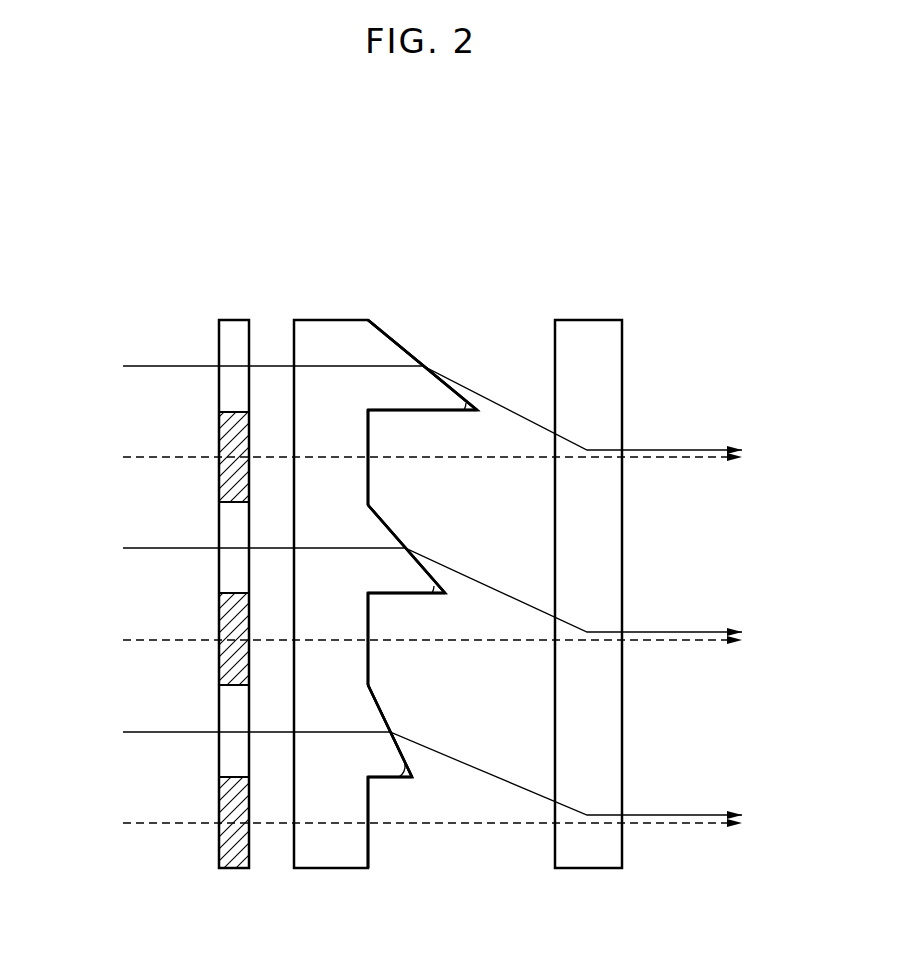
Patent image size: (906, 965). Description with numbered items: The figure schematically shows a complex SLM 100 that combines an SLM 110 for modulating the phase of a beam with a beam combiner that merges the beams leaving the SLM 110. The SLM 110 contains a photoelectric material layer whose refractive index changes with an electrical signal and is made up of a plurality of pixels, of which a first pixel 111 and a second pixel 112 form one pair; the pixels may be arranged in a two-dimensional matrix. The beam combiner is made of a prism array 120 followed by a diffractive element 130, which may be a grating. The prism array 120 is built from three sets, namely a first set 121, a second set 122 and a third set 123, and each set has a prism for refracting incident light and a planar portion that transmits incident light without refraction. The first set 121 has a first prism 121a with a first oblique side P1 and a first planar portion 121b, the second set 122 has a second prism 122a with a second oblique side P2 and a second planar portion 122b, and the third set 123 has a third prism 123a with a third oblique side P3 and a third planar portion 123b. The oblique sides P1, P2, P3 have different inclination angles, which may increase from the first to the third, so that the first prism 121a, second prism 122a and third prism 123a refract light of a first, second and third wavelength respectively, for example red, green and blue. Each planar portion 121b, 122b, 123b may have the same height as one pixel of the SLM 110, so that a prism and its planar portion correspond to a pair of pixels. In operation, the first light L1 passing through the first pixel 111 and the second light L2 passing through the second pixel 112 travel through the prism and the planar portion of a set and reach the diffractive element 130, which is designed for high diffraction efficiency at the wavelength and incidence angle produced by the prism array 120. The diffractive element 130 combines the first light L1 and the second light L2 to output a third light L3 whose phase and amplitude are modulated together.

The complex SLM 100 is at (150, 237).
The SLM 110 is at (233, 330).
The first pixel 111 is at (228, 384).
The second pixel 112 is at (228, 487).
The prism array 120 is at (331, 330).
The first set 121 is at (505, 498).
The first prism 121a is at (440, 412).
The first planar portion 121b is at (370, 477).
The second set 122 is at (505, 682).
The second prism 122a is at (412, 595).
The second planar portion 122b is at (370, 662).
The third set 123 is at (505, 867).
The third prism 123a is at (390, 779).
The third planar portion 123b is at (370, 845).
The diffractive element 130 is at (585, 330).
The first light L1 is at (143, 366).
The second light L2 is at (143, 457).
The third light L3 is at (750, 634).
The first oblique side P1 is at (398, 342).
The second oblique side P2 is at (385, 518).
The third oblique side P3 is at (388, 700).